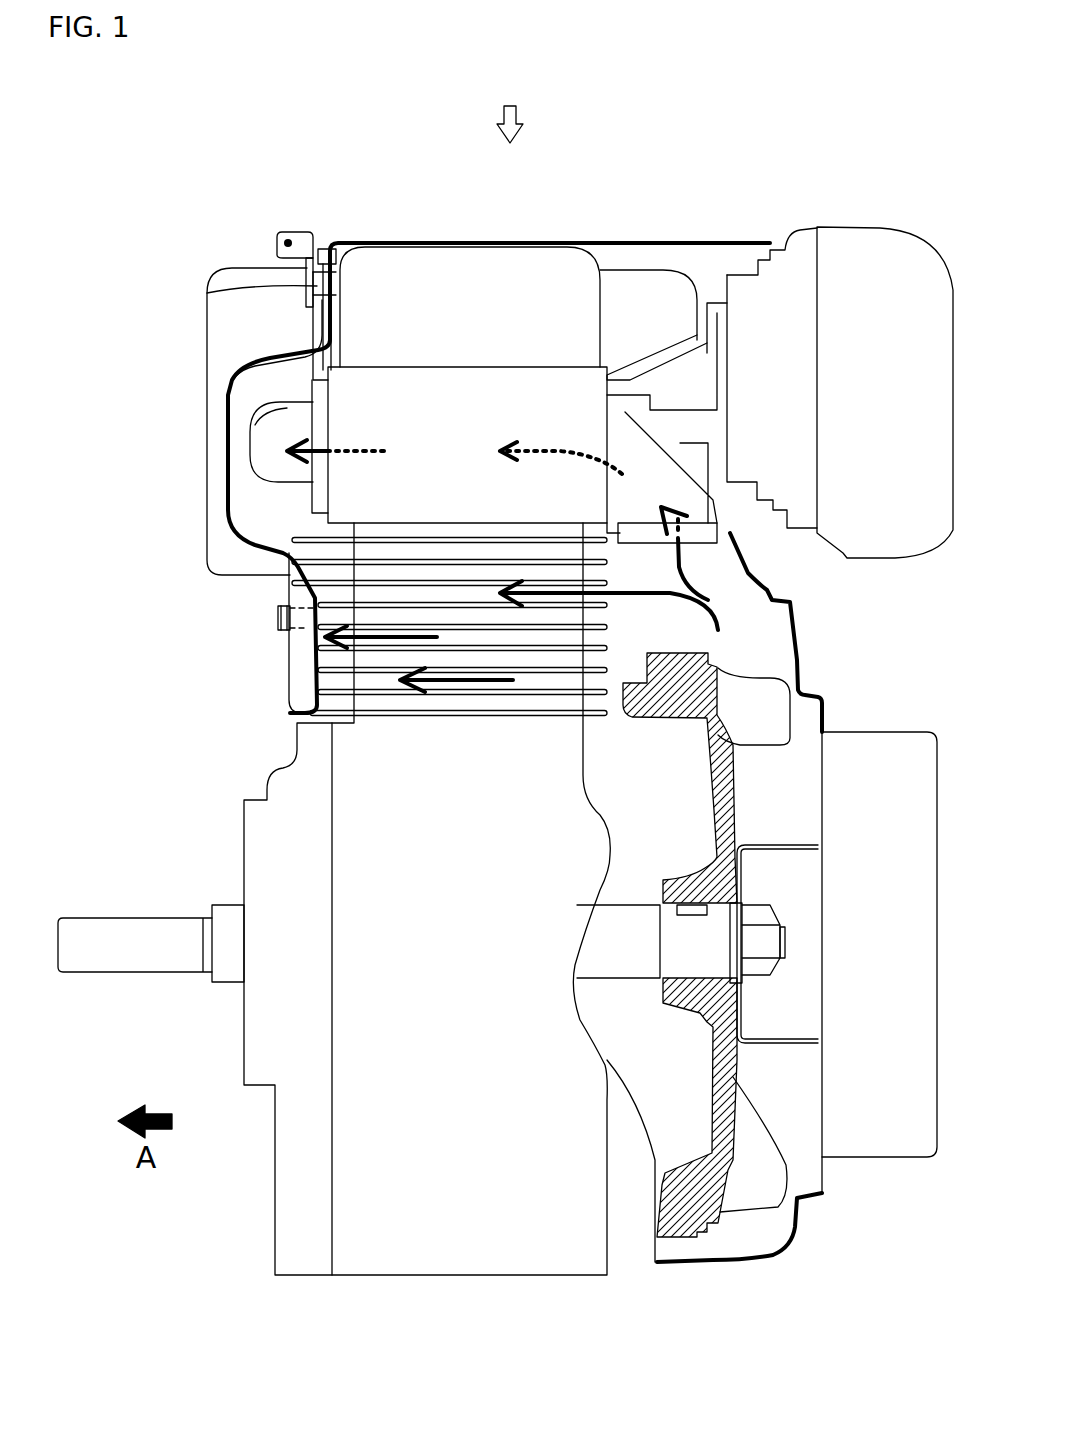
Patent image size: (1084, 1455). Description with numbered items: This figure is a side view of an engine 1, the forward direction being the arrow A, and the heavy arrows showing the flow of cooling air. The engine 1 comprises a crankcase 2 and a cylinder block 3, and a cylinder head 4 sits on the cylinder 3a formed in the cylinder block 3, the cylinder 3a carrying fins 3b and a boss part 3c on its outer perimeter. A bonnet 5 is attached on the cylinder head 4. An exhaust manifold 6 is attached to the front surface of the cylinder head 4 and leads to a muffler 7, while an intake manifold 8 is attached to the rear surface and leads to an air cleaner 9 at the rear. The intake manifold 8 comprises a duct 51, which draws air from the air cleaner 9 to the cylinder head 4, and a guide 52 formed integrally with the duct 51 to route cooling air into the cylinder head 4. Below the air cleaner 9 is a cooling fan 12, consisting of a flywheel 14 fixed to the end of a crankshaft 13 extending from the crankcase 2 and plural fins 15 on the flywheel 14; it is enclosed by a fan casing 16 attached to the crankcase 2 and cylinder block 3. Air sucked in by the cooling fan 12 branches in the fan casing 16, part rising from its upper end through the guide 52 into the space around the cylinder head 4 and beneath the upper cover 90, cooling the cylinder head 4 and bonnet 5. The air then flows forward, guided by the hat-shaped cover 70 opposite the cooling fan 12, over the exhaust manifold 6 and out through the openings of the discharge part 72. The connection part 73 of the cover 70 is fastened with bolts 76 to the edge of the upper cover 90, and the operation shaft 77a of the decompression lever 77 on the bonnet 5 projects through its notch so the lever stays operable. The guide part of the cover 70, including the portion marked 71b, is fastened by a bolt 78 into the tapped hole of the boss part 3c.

The engine 1 is at (510, 107).
The crankcase 2 is at (273, 1242).
The cylinder block 3 is at (617, 737).
The cylinder 3a is at (588, 638).
The fins 3b is at (437, 717).
The boss part 3c is at (308, 633).
The cylinder head 4 is at (467, 367).
The bonnet 5 is at (598, 268).
The exhaust manifold 6 is at (248, 447).
The muffler 7 is at (244, 267).
The intake manifold 8 is at (722, 297).
The air cleaner 9 is at (887, 227).
The cooling fan 12 is at (777, 658).
The crankshaft 13 is at (633, 983).
The flywheel 14 is at (687, 1237).
The fins 15 is at (793, 718).
The fan casing 16 is at (767, 581).
The duct 51 is at (653, 353).
The guide 52 is at (717, 515).
The cover 70 is at (226, 396).
The lower flange 71b is at (288, 712).
The discharge part 72 is at (225, 500).
The connection part 73 is at (330, 300).
The bolts 76 is at (318, 249).
The decompression lever 77 is at (287, 230).
The operation shaft 77a is at (218, 293).
The bolt 78 is at (277, 618).
The upper cover 90 is at (503, 240).